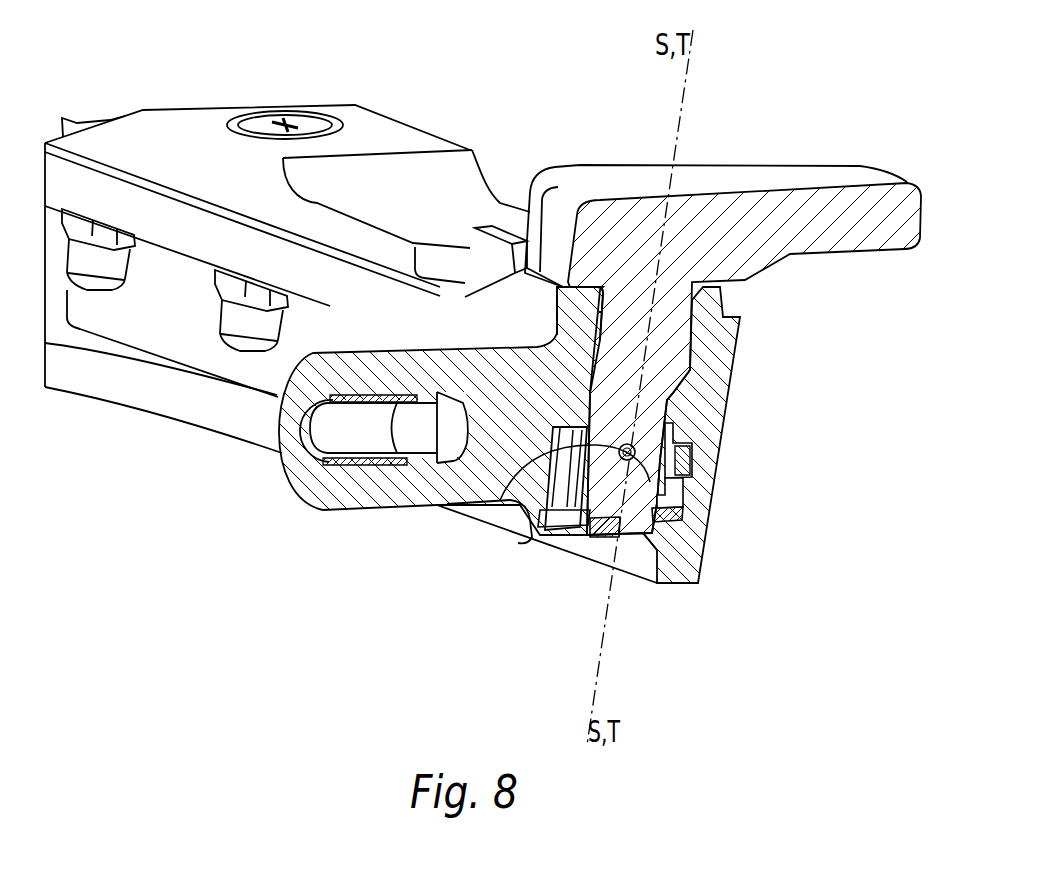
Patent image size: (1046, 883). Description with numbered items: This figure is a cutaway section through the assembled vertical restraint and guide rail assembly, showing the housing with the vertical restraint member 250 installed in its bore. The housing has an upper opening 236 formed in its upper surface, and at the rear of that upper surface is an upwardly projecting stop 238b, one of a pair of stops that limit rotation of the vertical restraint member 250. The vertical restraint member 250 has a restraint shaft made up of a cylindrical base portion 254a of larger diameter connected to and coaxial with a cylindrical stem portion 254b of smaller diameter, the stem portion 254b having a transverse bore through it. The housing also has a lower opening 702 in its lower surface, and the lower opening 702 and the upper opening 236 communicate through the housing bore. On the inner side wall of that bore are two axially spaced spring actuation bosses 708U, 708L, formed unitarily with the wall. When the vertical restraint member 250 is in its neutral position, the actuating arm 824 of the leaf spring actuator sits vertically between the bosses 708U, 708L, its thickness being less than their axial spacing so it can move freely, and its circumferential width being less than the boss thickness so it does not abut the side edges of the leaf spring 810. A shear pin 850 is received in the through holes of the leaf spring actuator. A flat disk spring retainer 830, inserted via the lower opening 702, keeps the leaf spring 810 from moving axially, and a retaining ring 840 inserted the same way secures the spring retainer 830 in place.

The upper opening 236 is at (603, 334).
The upwardly projecting stop 238b is at (492, 250).
The vertical restraint member 250 is at (785, 217).
The cylindrical base portion 254a is at (721, 310).
The cylindrical stem portion 254b is at (621, 544).
The lower opening 702 is at (553, 540).
The upper spring actuation boss 708U is at (691, 433).
The lower spring actuation boss 708L is at (678, 492).
The leaf spring 810 is at (556, 538).
The actuating arm 824 is at (681, 462).
The spring retainer 830 is at (684, 513).
The retaining ring 840 is at (612, 528).
The shear pin 850 is at (518, 502).